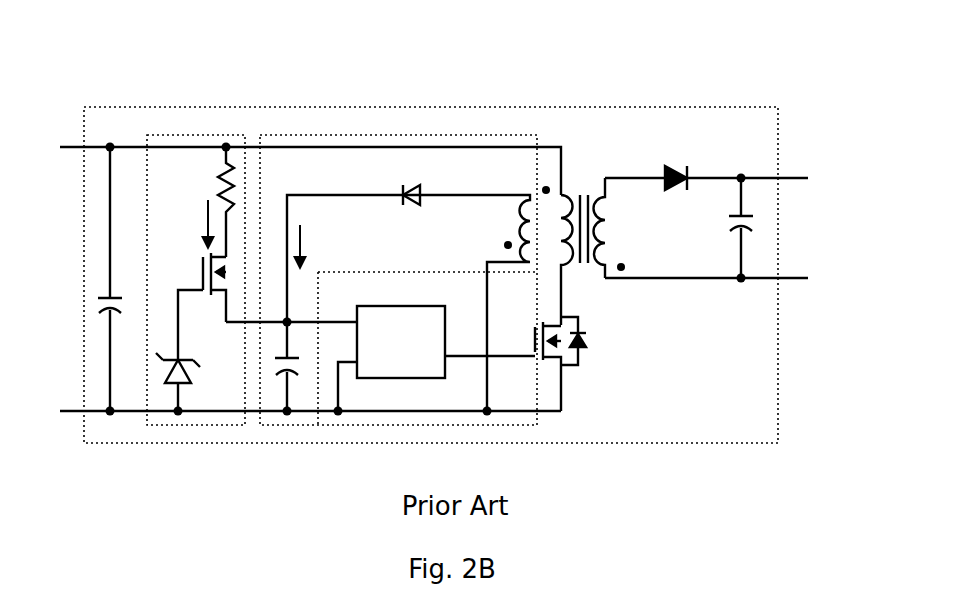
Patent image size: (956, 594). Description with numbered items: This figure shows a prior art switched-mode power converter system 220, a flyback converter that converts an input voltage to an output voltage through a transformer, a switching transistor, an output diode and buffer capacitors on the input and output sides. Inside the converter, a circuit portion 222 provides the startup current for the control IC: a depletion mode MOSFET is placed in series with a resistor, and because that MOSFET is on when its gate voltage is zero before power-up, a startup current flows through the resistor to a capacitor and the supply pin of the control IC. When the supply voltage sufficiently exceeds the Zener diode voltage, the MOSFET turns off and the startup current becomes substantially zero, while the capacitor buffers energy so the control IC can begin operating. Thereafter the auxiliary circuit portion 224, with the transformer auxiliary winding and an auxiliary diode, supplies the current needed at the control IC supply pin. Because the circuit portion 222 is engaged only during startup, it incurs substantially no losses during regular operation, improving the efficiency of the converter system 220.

The switched-mode power converter system 220 is at (128, 108).
The circuit portion 222 is at (212, 134).
The auxiliary circuit portion 224 is at (390, 134).